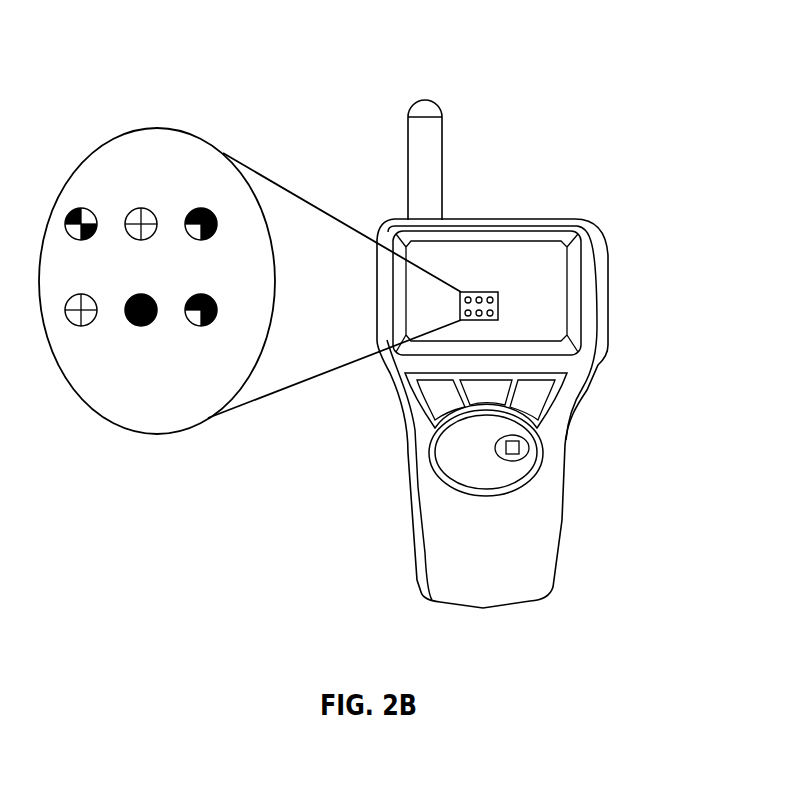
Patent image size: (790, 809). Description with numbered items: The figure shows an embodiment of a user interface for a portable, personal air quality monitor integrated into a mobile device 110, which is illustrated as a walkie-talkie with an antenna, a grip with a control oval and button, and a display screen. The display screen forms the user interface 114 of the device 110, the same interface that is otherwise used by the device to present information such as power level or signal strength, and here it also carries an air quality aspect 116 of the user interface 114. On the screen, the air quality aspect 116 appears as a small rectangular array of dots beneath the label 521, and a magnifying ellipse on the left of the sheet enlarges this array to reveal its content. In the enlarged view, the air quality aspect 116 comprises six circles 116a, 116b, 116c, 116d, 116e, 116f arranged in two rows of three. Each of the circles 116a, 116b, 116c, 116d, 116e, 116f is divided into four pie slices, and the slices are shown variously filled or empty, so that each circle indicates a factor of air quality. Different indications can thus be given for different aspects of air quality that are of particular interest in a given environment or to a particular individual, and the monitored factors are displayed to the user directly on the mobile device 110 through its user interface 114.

The mobile device 110 is at (601, 242).
The user interface 114 is at (533, 330).
The air quality aspect 116 is at (583, 286).
The sensor array identifier 521 is at (483, 286).
The circle 116a is at (82, 208).
The circle 116b is at (142, 208).
The circle 116c is at (201, 208).
The circle 116d is at (81, 326).
The circle 116e is at (141, 326).
The circle 116f is at (201, 326).